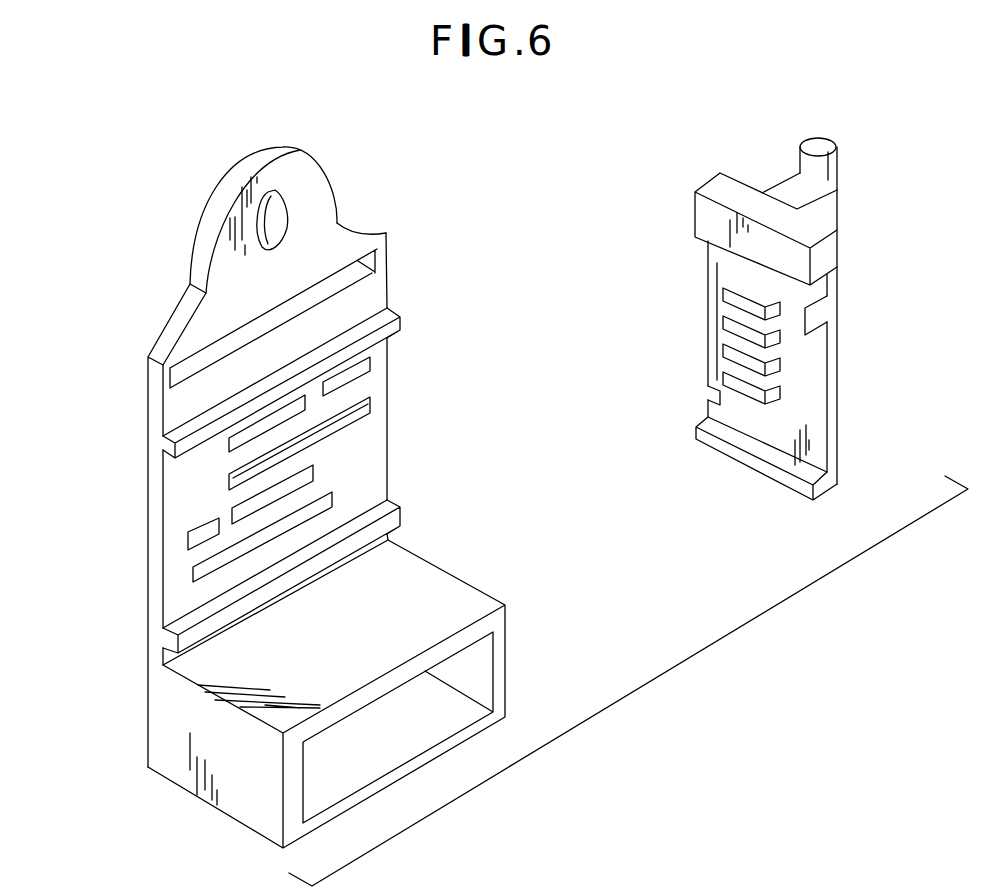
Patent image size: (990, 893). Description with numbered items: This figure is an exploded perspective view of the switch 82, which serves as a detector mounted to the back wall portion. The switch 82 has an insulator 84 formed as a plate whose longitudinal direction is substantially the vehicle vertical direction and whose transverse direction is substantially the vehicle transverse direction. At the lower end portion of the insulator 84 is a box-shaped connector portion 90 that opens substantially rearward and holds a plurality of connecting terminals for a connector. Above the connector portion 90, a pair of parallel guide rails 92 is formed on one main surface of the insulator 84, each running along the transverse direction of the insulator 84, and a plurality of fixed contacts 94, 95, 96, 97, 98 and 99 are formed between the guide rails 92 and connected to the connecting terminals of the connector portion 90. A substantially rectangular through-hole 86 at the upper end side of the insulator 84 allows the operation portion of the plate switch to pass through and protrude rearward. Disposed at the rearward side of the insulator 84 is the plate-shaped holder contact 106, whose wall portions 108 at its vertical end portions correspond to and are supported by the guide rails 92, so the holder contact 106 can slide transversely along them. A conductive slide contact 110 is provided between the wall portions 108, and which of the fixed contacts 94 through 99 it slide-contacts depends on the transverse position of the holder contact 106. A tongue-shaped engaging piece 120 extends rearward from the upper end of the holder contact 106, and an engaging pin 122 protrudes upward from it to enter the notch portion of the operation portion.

The switch 82 is at (237, 147).
The insulator 84 is at (328, 247).
The through-hole 86 is at (338, 286).
The connector portion 90 is at (460, 603).
The guide rails 92 is at (401, 308).
The fixed contact 94 is at (228, 450).
The fixed contact 95 is at (370, 376).
The fixed contact 96 is at (230, 490).
The fixed contact 97 is at (188, 548).
The fixed contact 98 is at (389, 470).
The fixed contact 99 is at (325, 504).
The holder contact 106 is at (833, 323).
The wall portions 108 is at (833, 297).
The slide contact 110 is at (708, 318).
The engaging piece 120 is at (833, 227).
The engaging pin 122 is at (838, 170).